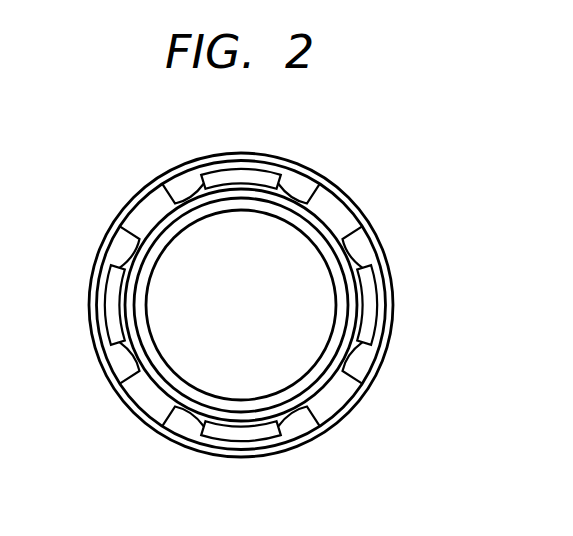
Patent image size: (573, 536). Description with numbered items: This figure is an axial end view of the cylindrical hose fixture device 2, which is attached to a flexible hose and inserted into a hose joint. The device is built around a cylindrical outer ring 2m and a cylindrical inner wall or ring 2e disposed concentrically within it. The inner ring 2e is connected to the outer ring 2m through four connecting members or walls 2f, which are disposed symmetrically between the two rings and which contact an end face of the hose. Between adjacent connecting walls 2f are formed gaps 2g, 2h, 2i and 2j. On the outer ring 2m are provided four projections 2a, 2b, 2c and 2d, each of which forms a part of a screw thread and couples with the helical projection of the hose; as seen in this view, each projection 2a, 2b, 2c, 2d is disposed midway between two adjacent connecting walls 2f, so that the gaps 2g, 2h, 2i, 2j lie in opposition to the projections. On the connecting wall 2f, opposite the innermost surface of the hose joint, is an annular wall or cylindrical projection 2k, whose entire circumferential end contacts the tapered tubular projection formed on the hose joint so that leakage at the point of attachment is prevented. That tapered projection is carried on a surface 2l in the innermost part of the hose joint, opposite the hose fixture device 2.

The hose fixture device 2 is at (137, 230).
The projection 2a is at (249, 176).
The projection 2b is at (369, 308).
The projection 2c is at (246, 440).
The projection 2d is at (103, 310).
The inner ring 2e is at (172, 390).
The connecting member 2f is at (340, 210).
The gap 2g is at (292, 182).
The gap 2h is at (365, 264).
The gap 2i is at (302, 424).
The gap 2j is at (119, 358).
The annular wall 2k is at (332, 288).
The surface 2l is at (345, 388).
The outer ring 2m is at (101, 253).